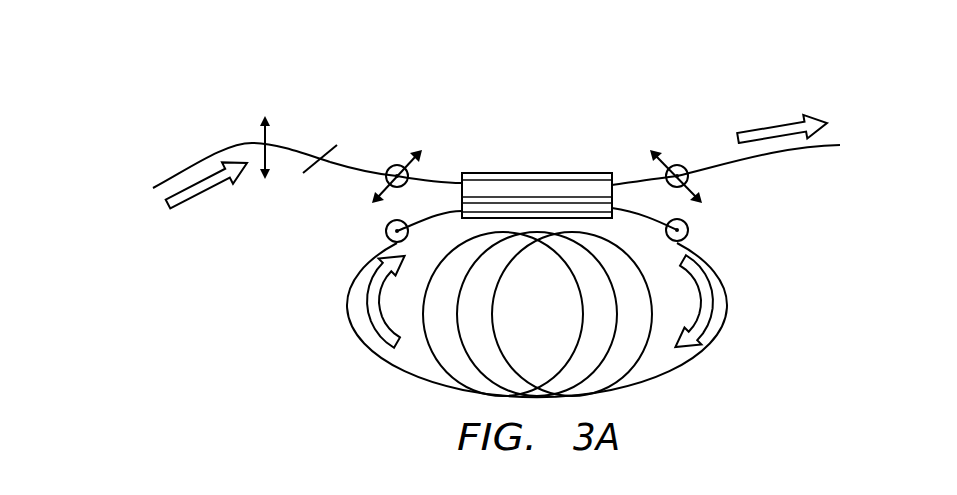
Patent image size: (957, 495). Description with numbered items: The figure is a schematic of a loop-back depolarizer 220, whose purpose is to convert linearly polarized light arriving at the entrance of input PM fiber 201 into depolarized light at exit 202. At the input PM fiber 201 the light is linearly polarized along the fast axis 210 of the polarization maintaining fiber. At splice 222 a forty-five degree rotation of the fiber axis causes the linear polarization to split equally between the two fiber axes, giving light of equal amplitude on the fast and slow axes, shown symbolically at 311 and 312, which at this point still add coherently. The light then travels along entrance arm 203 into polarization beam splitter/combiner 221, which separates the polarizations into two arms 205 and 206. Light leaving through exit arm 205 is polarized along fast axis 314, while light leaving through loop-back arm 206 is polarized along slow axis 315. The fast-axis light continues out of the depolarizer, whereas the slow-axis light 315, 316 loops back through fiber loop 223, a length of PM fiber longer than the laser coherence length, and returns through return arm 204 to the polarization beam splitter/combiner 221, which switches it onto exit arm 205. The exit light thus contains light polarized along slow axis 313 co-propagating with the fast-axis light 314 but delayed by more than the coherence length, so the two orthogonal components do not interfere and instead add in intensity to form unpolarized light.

The input PM fiber 201 is at (183, 170).
The exit 202 is at (790, 151).
The entrance arm 203 is at (443, 182).
The return arm 204 is at (415, 218).
The exit arm 205 is at (628, 182).
The loop-back arm 206 is at (650, 216).
The fast axis 210 is at (262, 135).
The loop-back depolarizer 220 is at (577, 86).
The polarization beam splitter/combiner 221 is at (520, 173).
The splice 222 is at (325, 145).
The fiber loop 223 is at (727, 300).
The polarization (fast axis component) 311 is at (412, 156).
The polarization (slow axis component) 312 is at (388, 167).
The slow axis 313 is at (685, 165).
The fast axis 314 is at (667, 158).
The slow axis 315 is at (690, 235).
The slow axis 316 is at (387, 235).